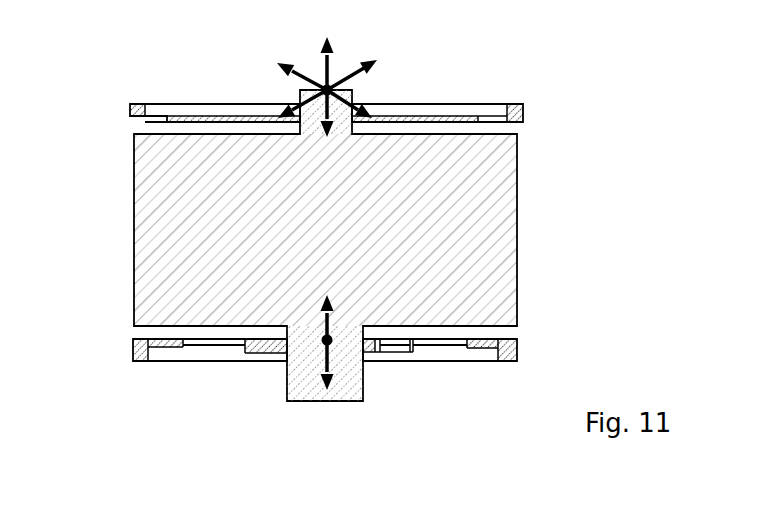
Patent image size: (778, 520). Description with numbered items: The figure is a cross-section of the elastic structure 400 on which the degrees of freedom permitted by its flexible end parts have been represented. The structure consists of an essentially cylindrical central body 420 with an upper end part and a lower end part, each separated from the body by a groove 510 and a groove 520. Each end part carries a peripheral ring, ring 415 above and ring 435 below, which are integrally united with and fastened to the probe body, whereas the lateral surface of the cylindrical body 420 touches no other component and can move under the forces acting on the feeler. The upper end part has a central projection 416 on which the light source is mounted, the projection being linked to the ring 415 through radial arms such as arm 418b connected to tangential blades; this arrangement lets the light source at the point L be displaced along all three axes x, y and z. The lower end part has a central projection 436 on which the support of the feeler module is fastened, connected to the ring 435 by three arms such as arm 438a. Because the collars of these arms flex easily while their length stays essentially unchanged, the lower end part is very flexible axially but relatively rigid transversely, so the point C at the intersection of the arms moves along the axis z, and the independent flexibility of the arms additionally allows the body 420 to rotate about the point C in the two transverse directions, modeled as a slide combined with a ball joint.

The elastic structure 400 is at (582, 138).
The peripheral ring 415 is at (130, 109).
The central projection 416 is at (352, 94).
The radial arm 418b is at (252, 117).
The cylindrical central body 420 is at (134, 260).
The peripheral ring 435 is at (517, 348).
The central projection 436 is at (345, 401).
The arm 438a is at (222, 347).
The groove 510 is at (147, 128).
The groove 520 is at (512, 333).
The point of the light source L is at (331, 84).
The point C is at (334, 348).